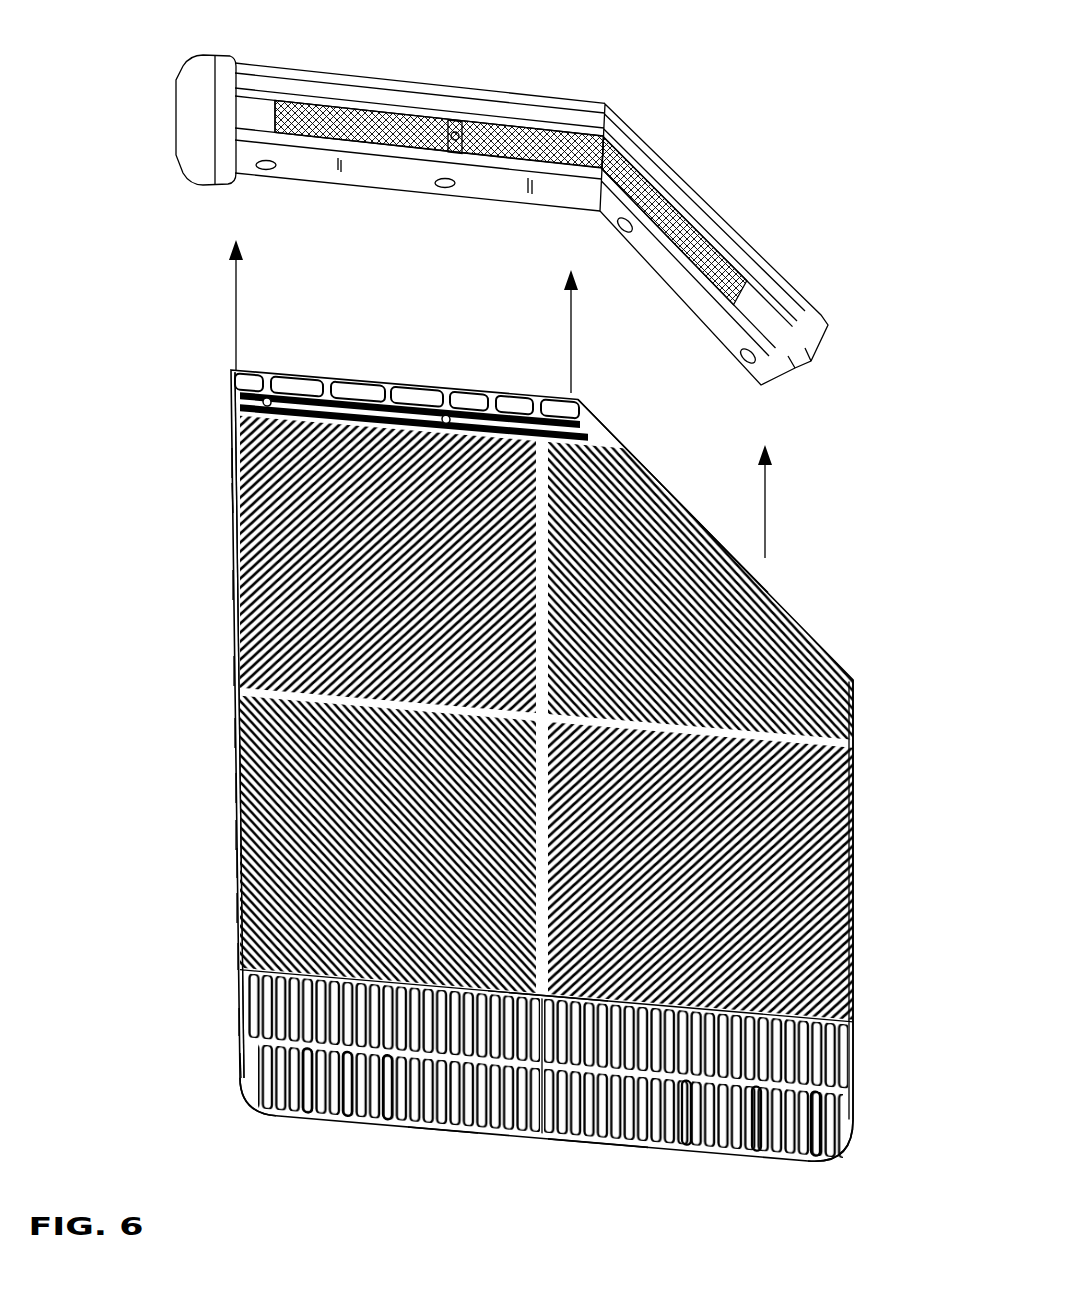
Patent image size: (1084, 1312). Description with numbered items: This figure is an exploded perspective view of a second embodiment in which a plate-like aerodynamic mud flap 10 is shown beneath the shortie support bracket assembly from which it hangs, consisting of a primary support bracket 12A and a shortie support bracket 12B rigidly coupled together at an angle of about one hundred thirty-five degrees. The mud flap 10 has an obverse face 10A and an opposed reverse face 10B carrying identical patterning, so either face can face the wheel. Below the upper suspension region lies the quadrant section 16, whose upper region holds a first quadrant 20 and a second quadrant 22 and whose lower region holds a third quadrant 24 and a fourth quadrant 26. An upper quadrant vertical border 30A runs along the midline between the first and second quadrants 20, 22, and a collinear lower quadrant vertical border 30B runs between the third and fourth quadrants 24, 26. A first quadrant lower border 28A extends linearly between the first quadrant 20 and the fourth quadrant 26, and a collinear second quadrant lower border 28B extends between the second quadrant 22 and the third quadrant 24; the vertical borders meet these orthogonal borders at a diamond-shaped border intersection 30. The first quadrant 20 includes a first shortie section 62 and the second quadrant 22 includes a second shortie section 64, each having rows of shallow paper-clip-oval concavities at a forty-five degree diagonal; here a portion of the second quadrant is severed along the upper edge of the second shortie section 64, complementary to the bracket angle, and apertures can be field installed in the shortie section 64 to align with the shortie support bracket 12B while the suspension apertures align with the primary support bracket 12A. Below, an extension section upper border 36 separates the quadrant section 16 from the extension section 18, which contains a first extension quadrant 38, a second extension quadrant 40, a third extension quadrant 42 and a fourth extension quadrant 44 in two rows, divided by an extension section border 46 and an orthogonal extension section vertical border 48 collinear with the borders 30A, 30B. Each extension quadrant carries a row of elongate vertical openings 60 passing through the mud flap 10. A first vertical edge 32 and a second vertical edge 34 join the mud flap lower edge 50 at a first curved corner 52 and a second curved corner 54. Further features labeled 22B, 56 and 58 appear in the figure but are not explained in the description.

The mud flap 10 is at (109, 1141).
The obverse face 10A is at (228, 853).
The reverse face 10B is at (233, 1057).
The primary support bracket 12A is at (563, 83).
The shortie support bracket 12B is at (737, 207).
The quadrant section 16 is at (889, 420).
The extension section 18 is at (889, 1010).
The first quadrant 20 is at (224, 623).
The second quadrant 22 is at (225, 531).
The angled top corner 22B is at (616, 430).
The third quadrant 24 is at (228, 898).
The fourth quadrant 26 is at (228, 948).
The first quadrant lower border 28A is at (228, 725).
The second quadrant lower border 28B is at (838, 671).
The border intersection 30 is at (228, 827).
The upper quadrant vertical border 30A is at (228, 780).
The lower quadrant vertical border 30B is at (477, 1120).
The first vertical edge 32 is at (225, 454).
The second vertical edge 34 is at (847, 823).
The extension section upper border 36 is at (437, 1117).
The first extension quadrant 38 is at (237, 1012).
The second extension quadrant 40 is at (297, 1100).
The third extension quadrant 42 is at (747, 1137).
The fourth extension quadrant 44 is at (677, 1130).
The extension section border 46 is at (337, 1098).
The extension section vertical border 48 is at (537, 1090).
The mud flap lower edge 50 is at (590, 1137).
The first curved corner 52 is at (247, 1078).
The second curved corner 54 is at (835, 1130).
The upper rib 56 is at (225, 489).
The middle rib 58 is at (225, 663).
The vertical openings 60 is at (378, 1098).
The first shortie section 62 is at (225, 577).
The second shortie section 64 is at (676, 498).